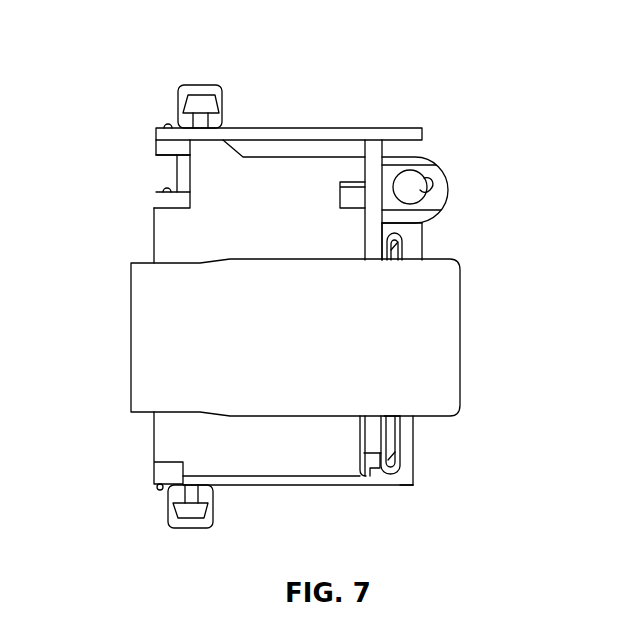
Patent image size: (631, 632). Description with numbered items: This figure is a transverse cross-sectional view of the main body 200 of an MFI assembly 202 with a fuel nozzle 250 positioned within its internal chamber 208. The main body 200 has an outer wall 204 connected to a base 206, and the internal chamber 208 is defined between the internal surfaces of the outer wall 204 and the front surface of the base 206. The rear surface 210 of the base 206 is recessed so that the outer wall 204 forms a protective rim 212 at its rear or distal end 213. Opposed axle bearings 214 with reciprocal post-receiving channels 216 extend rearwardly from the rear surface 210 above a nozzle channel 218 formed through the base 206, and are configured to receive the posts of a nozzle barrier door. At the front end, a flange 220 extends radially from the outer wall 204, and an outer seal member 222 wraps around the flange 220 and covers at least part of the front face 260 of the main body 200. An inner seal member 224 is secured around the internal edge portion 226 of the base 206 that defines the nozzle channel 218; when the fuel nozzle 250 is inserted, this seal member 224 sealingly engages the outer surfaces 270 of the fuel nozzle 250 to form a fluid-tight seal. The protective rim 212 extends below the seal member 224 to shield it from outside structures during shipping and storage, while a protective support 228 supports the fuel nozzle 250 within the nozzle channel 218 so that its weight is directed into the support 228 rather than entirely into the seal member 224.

The main body 200 is at (403, 108).
The MFI assembly 202 is at (95, 103).
The outer wall 204 is at (340, 128).
The base 206 is at (422, 238).
The internal chamber 208 is at (167, 232).
The rear surface 210 is at (437, 220).
The protective rim 212 is at (403, 487).
The distal end 213 is at (413, 477).
The axle bearings 214 is at (432, 157).
The post-receiving channels 216 is at (430, 188).
The nozzle channel 218 is at (402, 416).
The flange 220 is at (222, 104).
The outer seal member 222 is at (197, 85).
The inner seal member 224 is at (422, 245).
The internal edge portion 226 is at (437, 212).
The protective support 228 is at (360, 453).
The fuel nozzle 250 is at (131, 392).
The front face 260 is at (173, 168).
The outer surfaces 270 is at (392, 416).